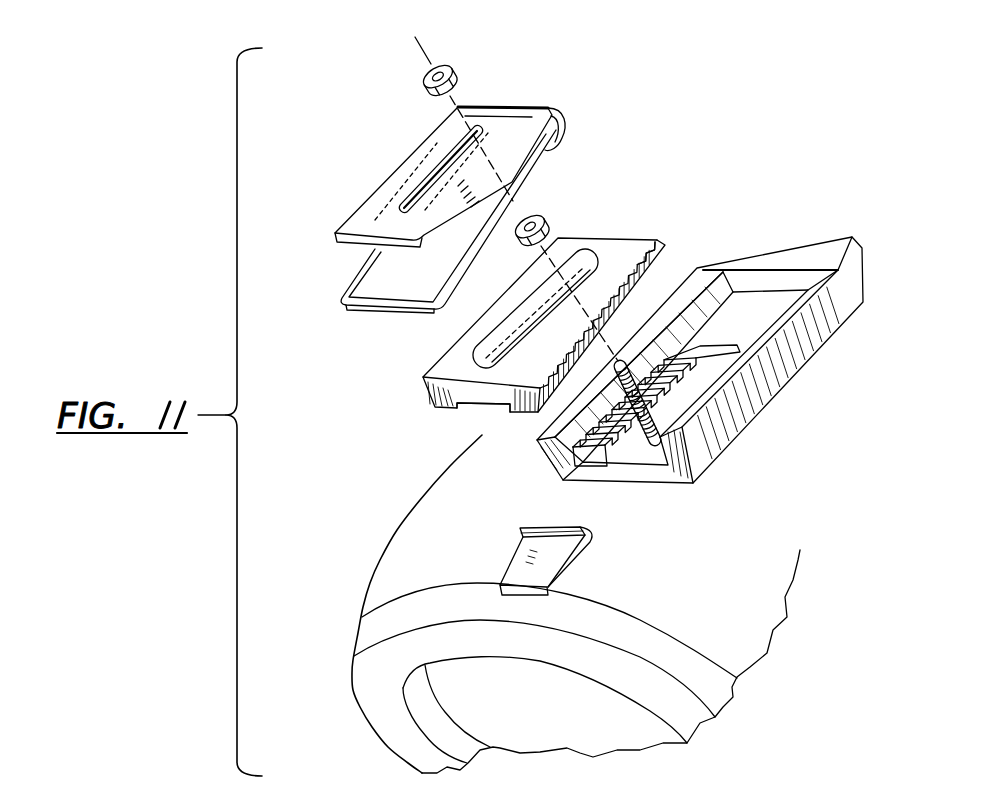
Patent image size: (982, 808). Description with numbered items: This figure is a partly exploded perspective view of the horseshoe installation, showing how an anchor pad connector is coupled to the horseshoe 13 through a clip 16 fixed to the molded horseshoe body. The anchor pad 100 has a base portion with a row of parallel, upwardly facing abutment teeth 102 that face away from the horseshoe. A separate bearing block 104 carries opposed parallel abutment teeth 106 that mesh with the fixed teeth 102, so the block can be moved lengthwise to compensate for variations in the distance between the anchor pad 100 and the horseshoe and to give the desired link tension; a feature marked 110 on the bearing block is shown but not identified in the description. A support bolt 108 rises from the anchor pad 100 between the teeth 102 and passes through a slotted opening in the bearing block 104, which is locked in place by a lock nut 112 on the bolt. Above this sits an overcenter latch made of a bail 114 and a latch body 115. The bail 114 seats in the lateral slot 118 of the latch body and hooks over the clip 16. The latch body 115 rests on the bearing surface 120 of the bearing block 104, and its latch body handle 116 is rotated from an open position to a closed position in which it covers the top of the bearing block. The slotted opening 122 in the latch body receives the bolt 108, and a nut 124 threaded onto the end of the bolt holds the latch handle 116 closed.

The anchor pad 100 is at (812, 238).
The abutment teeth 102 is at (676, 350).
The bearing block 104 is at (460, 340).
The opposed abutment teeth 106 is at (656, 298).
The support bolt 108 is at (658, 417).
The bottom groove of clamp block 110 is at (436, 404).
The lock nut 112 is at (541, 217).
The bail 114 is at (350, 283).
The latch body 115 is at (437, 125).
The latch body handle 116 is at (351, 213).
The lateral slot 118 is at (554, 121).
The bearing surface 120 is at (657, 256).
The slotted opening 122 is at (432, 179).
The nut 124 is at (456, 70).
The horseshoe 13 is at (363, 634).
The clip 16 is at (595, 550).